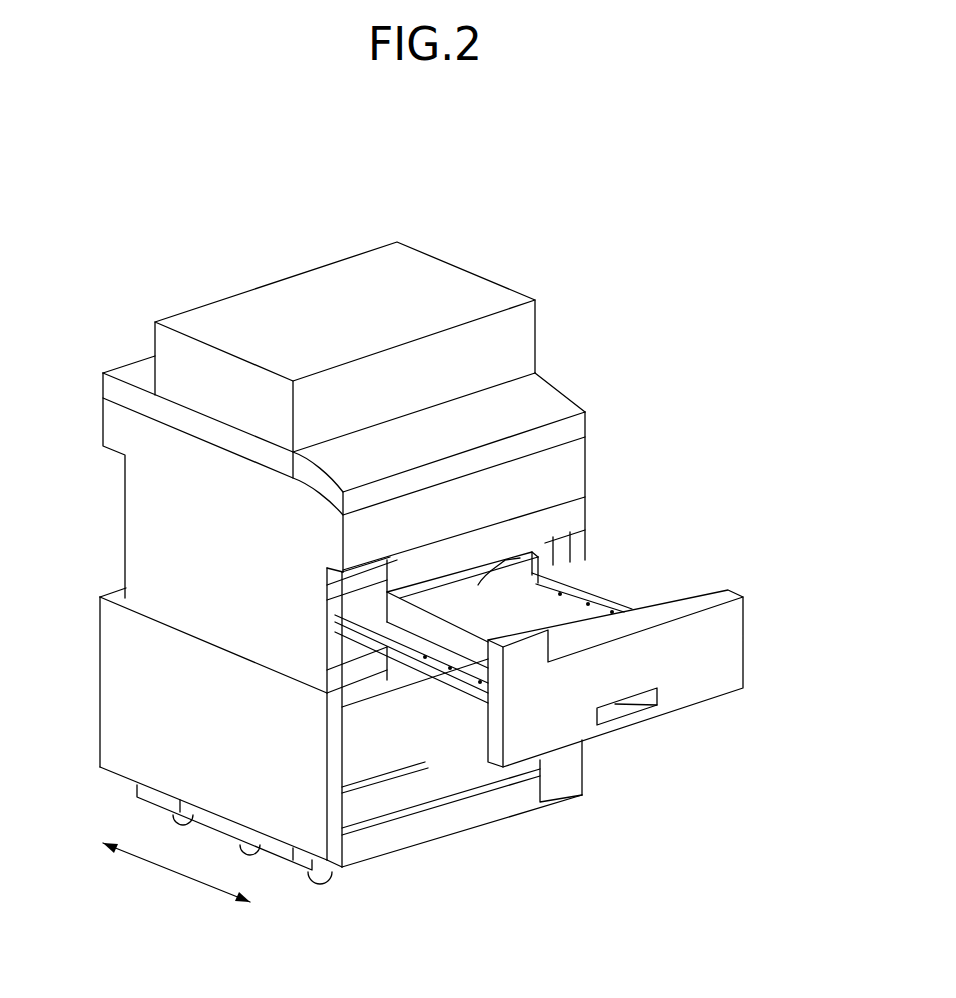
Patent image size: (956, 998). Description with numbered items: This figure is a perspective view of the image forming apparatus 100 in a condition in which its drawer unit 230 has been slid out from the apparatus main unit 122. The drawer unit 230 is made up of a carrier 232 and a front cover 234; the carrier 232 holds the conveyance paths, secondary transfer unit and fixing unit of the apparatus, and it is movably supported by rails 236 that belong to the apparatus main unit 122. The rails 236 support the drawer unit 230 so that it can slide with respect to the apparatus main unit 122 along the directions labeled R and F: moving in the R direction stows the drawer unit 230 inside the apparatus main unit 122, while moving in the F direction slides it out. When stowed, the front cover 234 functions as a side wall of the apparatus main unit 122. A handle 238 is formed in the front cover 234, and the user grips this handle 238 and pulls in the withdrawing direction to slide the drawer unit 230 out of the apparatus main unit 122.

The image forming apparatus 100 is at (545, 188).
The apparatus main unit 122 is at (125, 484).
The drawer unit 230 is at (617, 568).
The carrier 232 is at (613, 600).
The front cover 234 is at (730, 638).
The rails 236 is at (338, 633).
The handle 238 is at (618, 708).